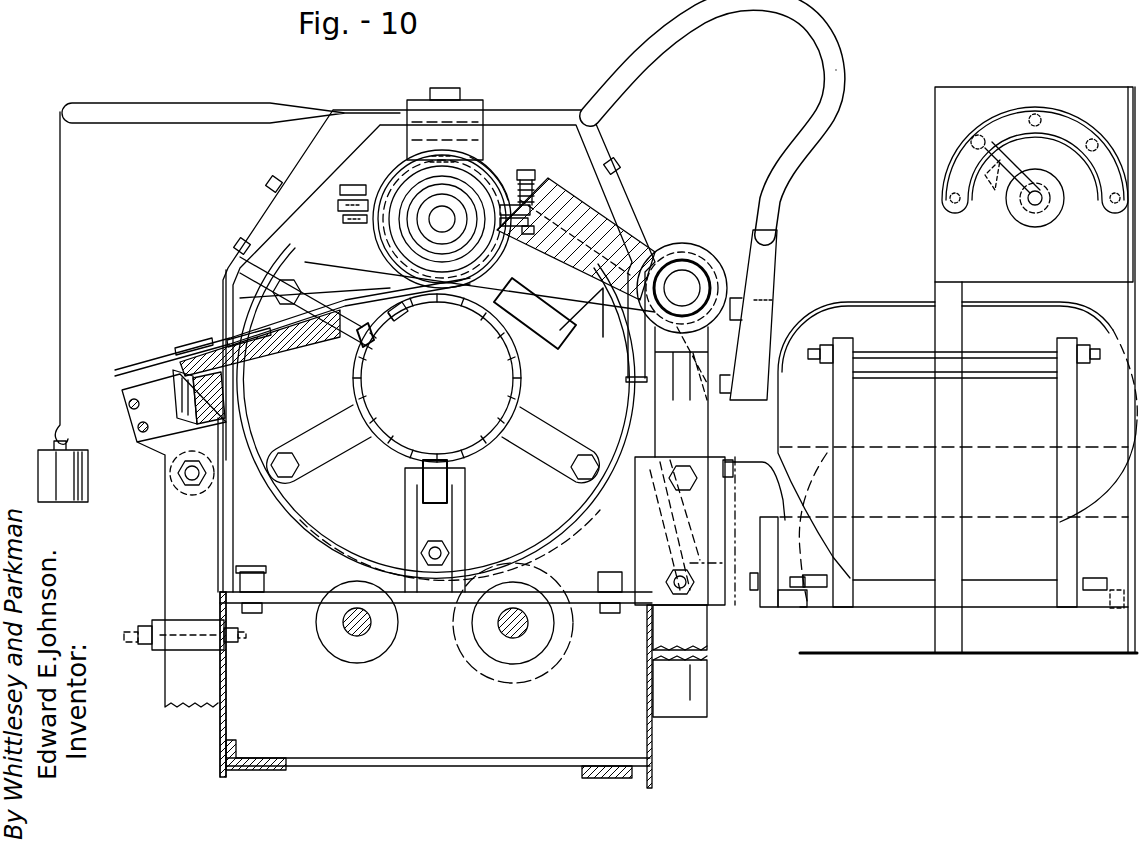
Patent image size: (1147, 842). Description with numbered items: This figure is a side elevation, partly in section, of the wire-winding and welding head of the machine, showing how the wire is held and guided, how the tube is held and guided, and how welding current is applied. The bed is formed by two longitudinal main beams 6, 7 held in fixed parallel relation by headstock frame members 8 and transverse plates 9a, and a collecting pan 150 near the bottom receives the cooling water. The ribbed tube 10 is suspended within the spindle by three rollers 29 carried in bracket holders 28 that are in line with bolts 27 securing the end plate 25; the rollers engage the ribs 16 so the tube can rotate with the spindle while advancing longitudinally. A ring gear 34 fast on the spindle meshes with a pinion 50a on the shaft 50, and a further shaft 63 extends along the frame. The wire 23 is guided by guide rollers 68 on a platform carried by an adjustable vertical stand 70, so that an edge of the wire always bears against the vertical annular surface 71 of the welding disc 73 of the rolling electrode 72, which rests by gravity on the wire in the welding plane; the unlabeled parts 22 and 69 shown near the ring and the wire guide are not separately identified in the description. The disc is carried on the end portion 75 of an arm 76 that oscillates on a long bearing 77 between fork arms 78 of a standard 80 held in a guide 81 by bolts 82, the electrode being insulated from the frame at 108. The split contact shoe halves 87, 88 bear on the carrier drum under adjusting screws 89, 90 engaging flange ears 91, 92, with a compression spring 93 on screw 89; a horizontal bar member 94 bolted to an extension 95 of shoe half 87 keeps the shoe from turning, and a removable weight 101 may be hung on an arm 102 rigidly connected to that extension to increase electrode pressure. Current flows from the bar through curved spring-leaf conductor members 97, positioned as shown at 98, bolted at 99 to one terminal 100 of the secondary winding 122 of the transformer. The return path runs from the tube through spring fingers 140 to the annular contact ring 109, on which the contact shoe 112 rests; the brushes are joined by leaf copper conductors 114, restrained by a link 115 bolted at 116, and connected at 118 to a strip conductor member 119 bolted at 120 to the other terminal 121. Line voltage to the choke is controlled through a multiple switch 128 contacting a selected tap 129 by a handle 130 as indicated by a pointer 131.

The longitudinal main beam 6 is at (645, 695).
The longitudinal main beam 7 is at (228, 680).
The headstock frame member 8 is at (235, 541).
The transverse plate 9a is at (310, 606).
The tube 10 is at (362, 374).
The rib 16 is at (357, 393).
The rod 22 is at (400, 314).
The wire 23 is at (137, 366).
The end plate 25 is at (316, 506).
The bolt 27 is at (272, 292).
The bracket holder 28 is at (405, 530).
The roller 29 is at (375, 340).
The ring gear 34 is at (330, 536).
The shaft 50 is at (525, 635).
The pinion 50a is at (510, 684).
The shaft 63 is at (356, 638).
The guide roller 68 is at (195, 318).
The wedge 69 is at (300, 342).
The adjustable vertical stand 70 is at (168, 568).
The vertical annular surface 71 is at (410, 262).
The electrode 72 is at (470, 265).
The welding disc 73 is at (390, 170).
The end portion 75 is at (420, 245).
The arm 76 is at (603, 337).
The long bearing 77 is at (716, 268).
The fork arm 78 is at (768, 270).
The standard 80 is at (690, 430).
The guide 81 is at (722, 458).
The bolt 82 is at (680, 597).
The contact shoe half 87 is at (492, 175).
The contact shoe half 88 is at (372, 244).
The adjusting screw 89 is at (535, 172).
The adjusting screw 90 is at (352, 185).
The flange ear 91 is at (530, 222).
The flange ear 92 is at (343, 218).
The compression spring 93 is at (536, 190).
The horizontal bar member 94 is at (485, 104).
The extension 95 is at (470, 140).
The spring-leaf conductor member 97 is at (600, 70).
The curved portion of conductor members 98 is at (838, 70).
The bolted end connection 99 is at (775, 295).
The terminal 100 is at (800, 300).
The removable weight 101 is at (38, 462).
The arm 102 is at (172, 106).
The insulation 108 is at (690, 265).
The annular contact ring 109 is at (590, 212).
The contact shoe 112 is at (610, 228).
The leaf copper conductor 114 is at (330, 125).
The link 115 is at (225, 275).
The bolt connection 116 is at (233, 248).
The connection 118 is at (617, 170).
The strip conductor member 119 is at (615, 237).
The bolt connection 120 is at (640, 537).
The terminal 121 is at (738, 520).
The secondary winding of the transformer 122 is at (895, 318).
The multiple switch 128 is at (1005, 190).
The tap 129 is at (1092, 136).
The handle 130 is at (1052, 218).
The pointer 131 is at (1010, 164).
The spring finger 140 is at (345, 460).
The collecting pan 150 is at (370, 758).